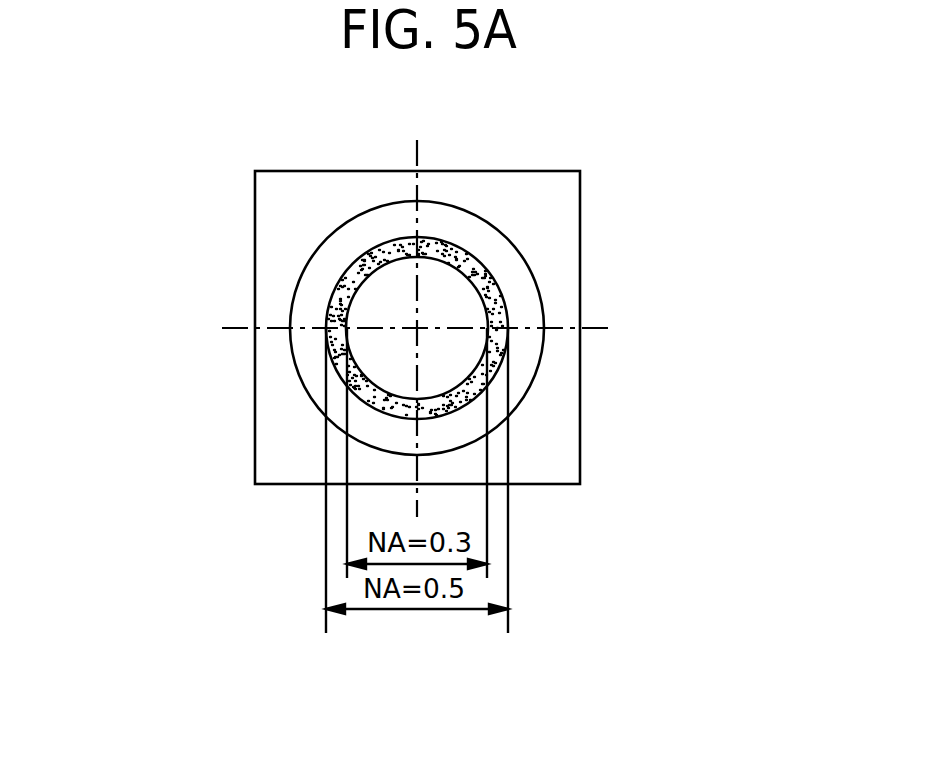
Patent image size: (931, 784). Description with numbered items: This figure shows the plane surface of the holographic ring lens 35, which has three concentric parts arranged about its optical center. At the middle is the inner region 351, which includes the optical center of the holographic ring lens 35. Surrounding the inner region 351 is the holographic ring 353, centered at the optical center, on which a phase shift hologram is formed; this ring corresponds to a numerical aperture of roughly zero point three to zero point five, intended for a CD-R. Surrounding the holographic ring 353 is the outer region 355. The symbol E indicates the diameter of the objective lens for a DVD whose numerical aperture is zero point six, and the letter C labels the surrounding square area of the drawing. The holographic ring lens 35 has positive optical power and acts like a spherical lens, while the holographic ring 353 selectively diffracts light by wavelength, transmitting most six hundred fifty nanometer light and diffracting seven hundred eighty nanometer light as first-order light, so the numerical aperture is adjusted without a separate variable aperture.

The holographic ring lens 35 is at (558, 442).
The inner region 351 is at (378, 297).
The holographic ring 353 is at (505, 294).
The outer region 355 is at (525, 373).
The diameter of the objective lens for a DVD E is at (468, 213).
The cell region C is at (553, 211).